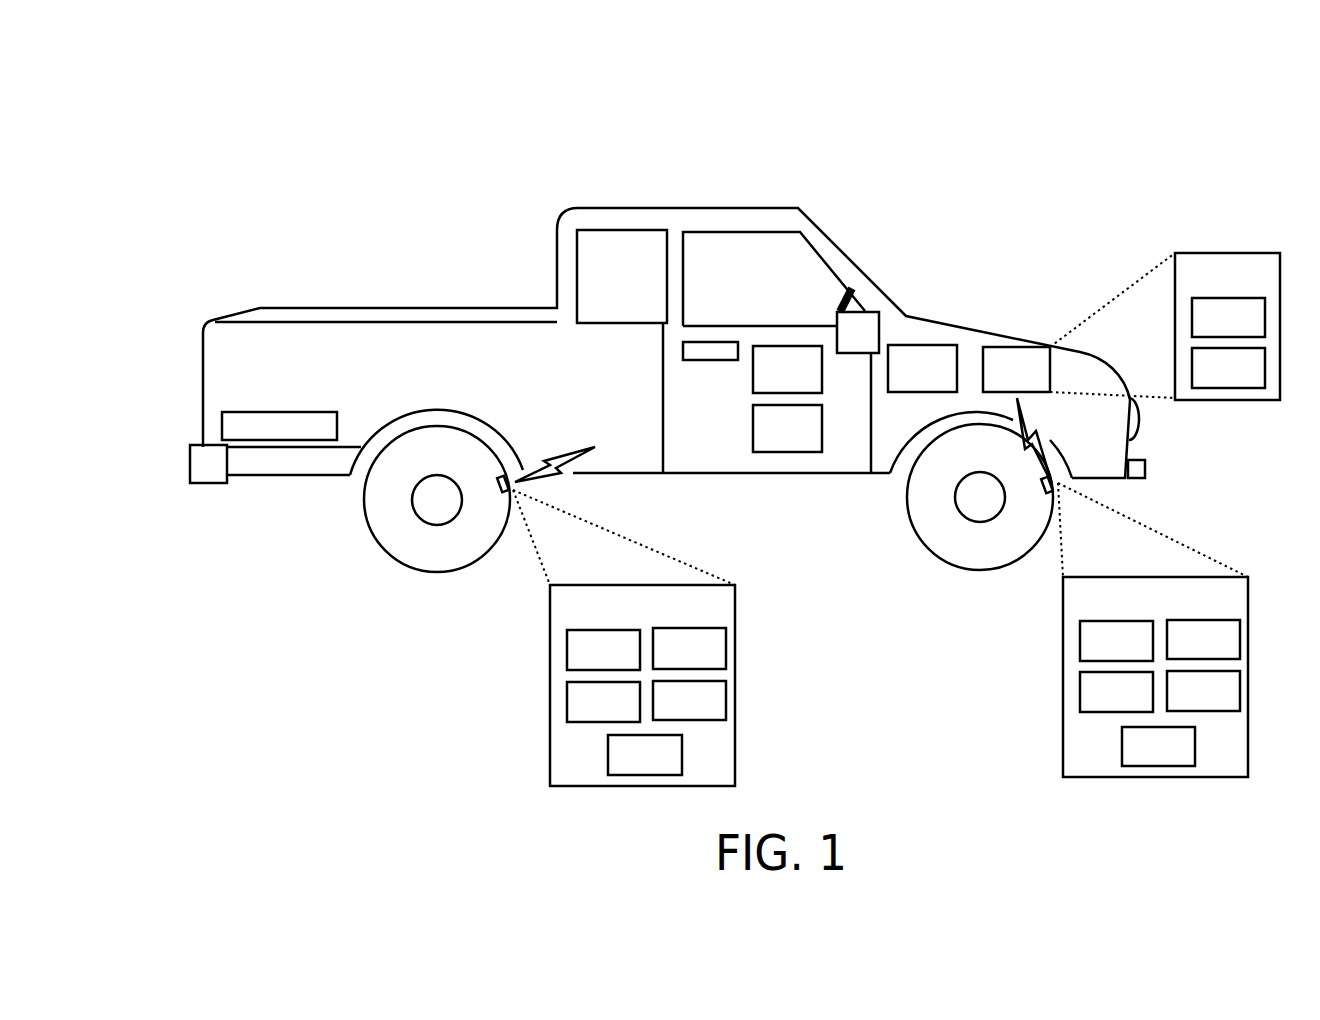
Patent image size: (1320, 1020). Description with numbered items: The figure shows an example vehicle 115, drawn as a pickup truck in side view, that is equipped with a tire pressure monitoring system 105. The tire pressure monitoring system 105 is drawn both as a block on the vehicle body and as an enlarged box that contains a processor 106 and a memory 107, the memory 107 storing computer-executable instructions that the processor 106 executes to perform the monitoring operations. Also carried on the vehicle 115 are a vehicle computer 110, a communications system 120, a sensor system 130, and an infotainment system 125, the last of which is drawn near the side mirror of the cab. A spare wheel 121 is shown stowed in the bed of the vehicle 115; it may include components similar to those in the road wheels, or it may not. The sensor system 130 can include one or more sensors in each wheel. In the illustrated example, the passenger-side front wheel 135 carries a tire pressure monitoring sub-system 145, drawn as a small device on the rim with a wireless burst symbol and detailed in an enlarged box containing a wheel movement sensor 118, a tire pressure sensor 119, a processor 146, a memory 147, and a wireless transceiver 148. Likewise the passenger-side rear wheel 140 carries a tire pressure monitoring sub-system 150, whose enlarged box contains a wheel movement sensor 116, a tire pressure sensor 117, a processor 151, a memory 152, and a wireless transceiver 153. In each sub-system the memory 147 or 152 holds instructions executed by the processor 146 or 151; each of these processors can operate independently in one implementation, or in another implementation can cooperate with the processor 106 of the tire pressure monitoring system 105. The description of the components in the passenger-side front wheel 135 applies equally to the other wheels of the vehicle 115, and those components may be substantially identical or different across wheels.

The tire pressure monitoring system 105 is at (1131, 326).
The processor 106 is at (1228, 317).
The memory 107 is at (1228, 368).
The vehicle computer 110 is at (922, 368).
The vehicle 115 is at (667, 266).
The communications system 120 is at (787, 369).
The spare wheel 121 is at (295, 406).
The infotainment system 125 is at (830, 304).
The sensor system 130 is at (787, 428).
The passenger-side front wheel 135 is at (947, 524).
The passenger-side rear wheel 140 is at (402, 523).
The tire pressure monitoring sub-system 145 is at (1125, 587).
The processor 146 is at (1116, 641).
The memory 147 is at (1203, 639).
The wheel movement sensor 118 is at (1116, 692).
The tire pressure sensor 119 is at (1203, 691).
The wireless transceiver 148 is at (1158, 746).
The tire pressure monitoring sub-system 150 is at (597, 616).
The processor 151 is at (603, 650).
The memory 152 is at (689, 648).
The wheel movement sensor 116 is at (603, 702).
The tire pressure sensor 117 is at (689, 700).
The wireless transceiver 153 is at (645, 755).